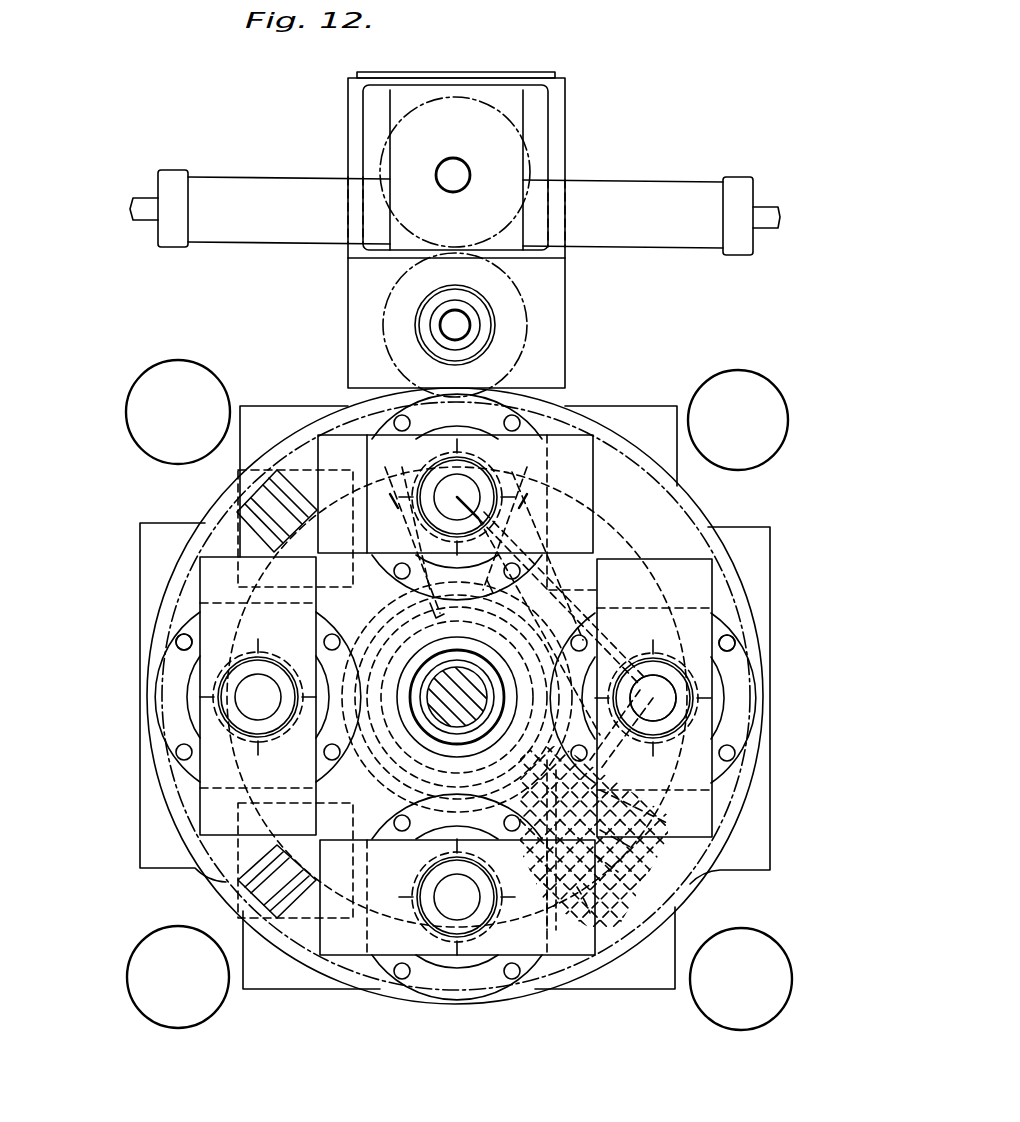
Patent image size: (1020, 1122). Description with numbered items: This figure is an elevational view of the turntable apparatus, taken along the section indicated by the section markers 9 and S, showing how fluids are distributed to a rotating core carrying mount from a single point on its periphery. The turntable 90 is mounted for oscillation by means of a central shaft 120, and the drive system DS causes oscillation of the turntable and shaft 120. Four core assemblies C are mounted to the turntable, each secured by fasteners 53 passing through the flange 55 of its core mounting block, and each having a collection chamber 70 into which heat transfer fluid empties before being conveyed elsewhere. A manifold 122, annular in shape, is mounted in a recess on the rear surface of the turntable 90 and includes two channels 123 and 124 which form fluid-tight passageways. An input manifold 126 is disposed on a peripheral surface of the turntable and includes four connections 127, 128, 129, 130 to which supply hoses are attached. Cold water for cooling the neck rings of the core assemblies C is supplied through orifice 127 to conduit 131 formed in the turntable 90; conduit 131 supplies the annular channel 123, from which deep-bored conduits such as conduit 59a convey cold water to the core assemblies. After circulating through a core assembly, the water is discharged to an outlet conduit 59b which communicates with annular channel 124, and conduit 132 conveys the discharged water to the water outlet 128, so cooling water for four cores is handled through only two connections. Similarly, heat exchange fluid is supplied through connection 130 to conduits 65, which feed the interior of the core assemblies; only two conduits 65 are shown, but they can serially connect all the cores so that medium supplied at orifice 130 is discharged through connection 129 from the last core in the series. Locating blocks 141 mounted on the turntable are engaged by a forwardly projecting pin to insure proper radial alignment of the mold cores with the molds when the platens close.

The section line 9- 9 is at (457, 14).
The stem S is at (457, 1014).
The drive system DS is at (528, 315).
The turntable 90 is at (180, 786).
The core assembly C is at (226, 591).
The source of heat transfer fluid 55 is at (172, 694).
The fasteners 53 is at (178, 640).
The central shaft 120 is at (433, 693).
The manifold 122 is at (375, 600).
The annular channel 124 is at (333, 742).
The annular channel 123 is at (342, 770).
The locating blocks 141 is at (268, 503).
The conduit 59a is at (408, 532).
The outlet conduit 59b is at (551, 565).
The conduit 65 is at (637, 741).
The collection chamber 70 is at (657, 680).
The conduit 132 is at (606, 765).
The connection 130 is at (645, 816).
The water outlet 128 is at (632, 848).
The orifice 127 is at (618, 872).
The input manifold 126 is at (590, 872).
The connection 129 is at (590, 913).
The conduit 131 is at (544, 852).